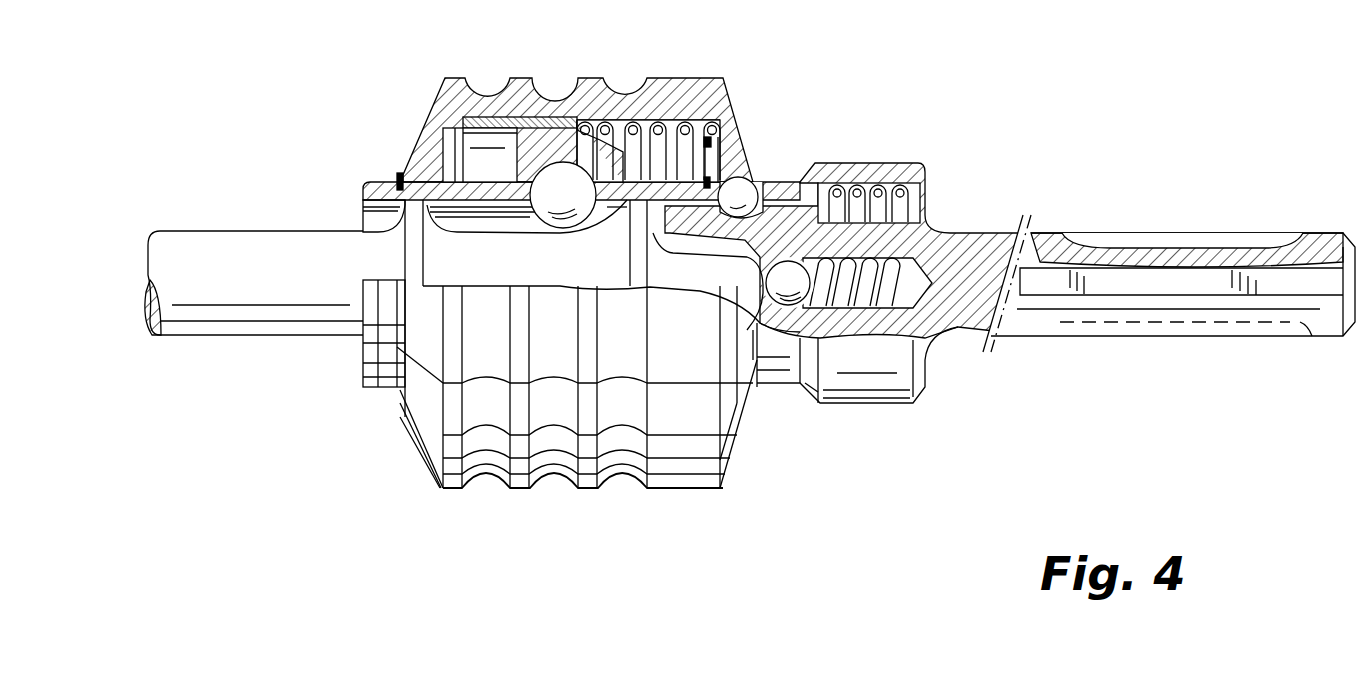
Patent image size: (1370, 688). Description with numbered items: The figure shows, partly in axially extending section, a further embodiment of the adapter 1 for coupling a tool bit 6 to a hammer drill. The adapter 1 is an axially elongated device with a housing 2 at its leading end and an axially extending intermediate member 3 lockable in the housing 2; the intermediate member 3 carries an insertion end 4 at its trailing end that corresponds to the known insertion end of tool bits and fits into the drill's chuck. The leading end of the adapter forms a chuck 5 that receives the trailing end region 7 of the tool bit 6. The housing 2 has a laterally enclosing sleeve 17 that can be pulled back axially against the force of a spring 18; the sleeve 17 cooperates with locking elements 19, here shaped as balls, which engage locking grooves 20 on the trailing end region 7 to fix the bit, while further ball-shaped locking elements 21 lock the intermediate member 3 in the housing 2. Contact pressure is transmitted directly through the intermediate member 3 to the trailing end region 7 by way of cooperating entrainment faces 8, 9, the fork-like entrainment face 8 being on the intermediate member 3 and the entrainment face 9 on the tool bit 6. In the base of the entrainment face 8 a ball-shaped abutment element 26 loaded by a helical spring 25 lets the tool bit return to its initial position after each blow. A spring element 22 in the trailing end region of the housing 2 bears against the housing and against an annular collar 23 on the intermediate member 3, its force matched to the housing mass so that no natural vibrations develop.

The adapter 1 is at (950, 162).
The housing 2 is at (424, 484).
The intermediate member 3 is at (962, 325).
The insertion end 4 is at (1325, 245).
The chuck 5 is at (345, 210).
The tool bit 6 is at (247, 248).
The trailing end region of the tool bit 7 is at (464, 263).
The entrainment face of the intermediate member 8 is at (680, 228).
The entrainment face of the tool bit 9 is at (712, 292).
The sleeve 17 is at (438, 103).
The spring 18 is at (658, 122).
The locking elements 19 is at (548, 226).
The locking grooves 20 is at (495, 232).
The locking elements 21 is at (742, 180).
The spring element 22 is at (855, 190).
The annular collar 23 is at (920, 193).
The spring 25 is at (876, 310).
The abutment element 26 is at (790, 262).